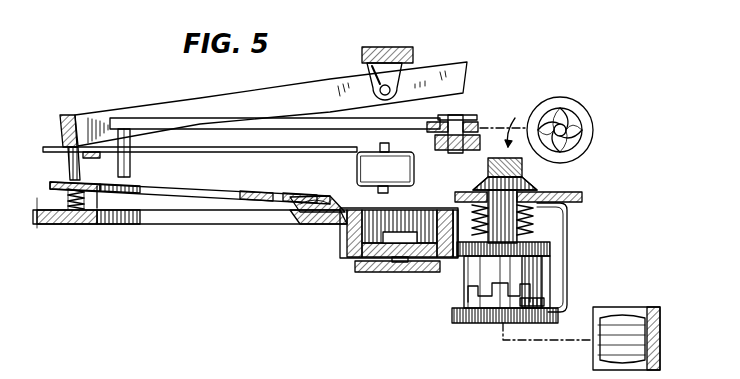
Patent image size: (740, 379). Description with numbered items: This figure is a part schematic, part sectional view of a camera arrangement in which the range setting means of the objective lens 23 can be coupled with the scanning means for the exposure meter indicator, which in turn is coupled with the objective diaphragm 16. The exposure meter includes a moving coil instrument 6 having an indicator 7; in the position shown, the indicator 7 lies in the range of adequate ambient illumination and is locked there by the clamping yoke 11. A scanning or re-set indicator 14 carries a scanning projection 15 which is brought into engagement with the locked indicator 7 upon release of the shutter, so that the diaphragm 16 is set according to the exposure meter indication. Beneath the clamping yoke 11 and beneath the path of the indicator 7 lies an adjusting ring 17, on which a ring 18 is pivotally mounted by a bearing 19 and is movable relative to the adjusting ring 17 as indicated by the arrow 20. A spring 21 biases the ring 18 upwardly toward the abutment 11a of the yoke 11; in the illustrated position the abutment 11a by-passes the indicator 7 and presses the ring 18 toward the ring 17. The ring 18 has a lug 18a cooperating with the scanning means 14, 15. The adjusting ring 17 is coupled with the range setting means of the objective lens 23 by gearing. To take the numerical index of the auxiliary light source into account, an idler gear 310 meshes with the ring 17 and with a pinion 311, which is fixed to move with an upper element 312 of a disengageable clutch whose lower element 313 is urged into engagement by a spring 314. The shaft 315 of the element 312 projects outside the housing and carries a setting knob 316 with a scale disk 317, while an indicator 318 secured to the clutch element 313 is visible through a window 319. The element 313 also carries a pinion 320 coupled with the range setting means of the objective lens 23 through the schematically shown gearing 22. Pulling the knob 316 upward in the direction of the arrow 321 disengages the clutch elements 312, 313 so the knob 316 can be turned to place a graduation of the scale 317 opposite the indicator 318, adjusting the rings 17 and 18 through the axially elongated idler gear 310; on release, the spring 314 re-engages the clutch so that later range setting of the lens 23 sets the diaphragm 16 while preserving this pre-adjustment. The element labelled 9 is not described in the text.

The moving coil instrument 6 is at (362, 168).
The indicator 7 is at (200, 153).
The pad 9 is at (93, 158).
The clamping yoke 11 is at (60, 125).
The abutment 11a is at (70, 165).
The scanning indicator 14 is at (158, 121).
The scanning projection 15 is at (130, 168).
The diaphragm 16 is at (578, 122).
The adjusting ring 17 is at (47, 225).
The ring 18 is at (284, 193).
The lug 18a is at (136, 187).
The bearing 19 is at (306, 200).
The arrow 20 is at (98, 200).
The spring 21 is at (67, 196).
The gearing 22 is at (545, 342).
The objective lens 23 is at (622, 312).
The idler gear 310 is at (352, 244).
The pinion 311 is at (551, 250).
The clutch element 312 is at (523, 270).
The clutch element 313 is at (474, 301).
The spring 314 is at (478, 212).
The shaft 315 is at (503, 236).
The setting knob 316 is at (488, 170).
The scale disk 317 is at (520, 185).
The indicator 318 is at (567, 233).
The window 319 is at (548, 195).
The pinion 320 is at (490, 324).
The arrow 321 is at (515, 120).